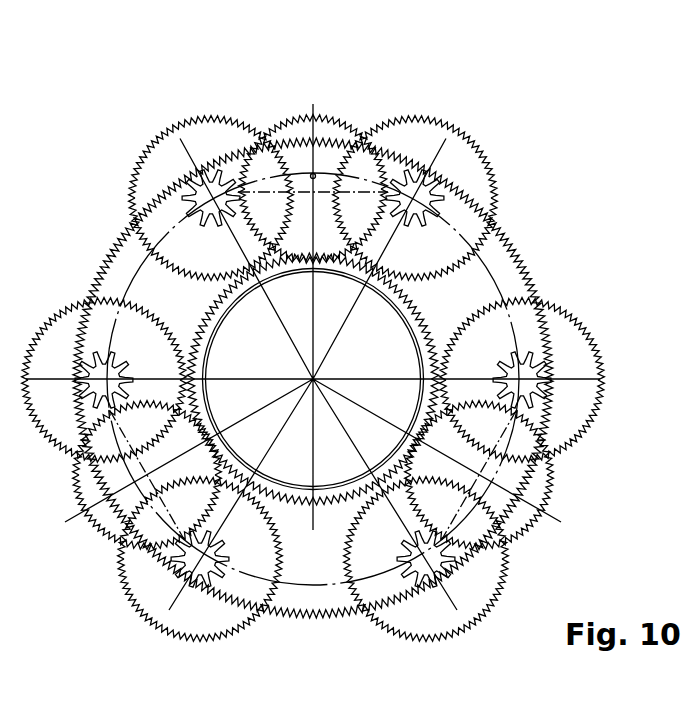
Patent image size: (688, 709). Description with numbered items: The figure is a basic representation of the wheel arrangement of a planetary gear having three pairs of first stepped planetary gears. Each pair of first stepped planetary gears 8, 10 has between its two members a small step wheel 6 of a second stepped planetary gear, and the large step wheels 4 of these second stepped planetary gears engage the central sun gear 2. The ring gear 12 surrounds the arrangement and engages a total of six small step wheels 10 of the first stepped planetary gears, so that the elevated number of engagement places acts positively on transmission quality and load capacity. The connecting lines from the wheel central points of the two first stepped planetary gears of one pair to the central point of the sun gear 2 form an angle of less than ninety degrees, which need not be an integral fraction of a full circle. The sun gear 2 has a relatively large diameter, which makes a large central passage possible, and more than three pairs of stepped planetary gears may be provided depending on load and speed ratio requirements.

The sun gear 2 is at (203, 320).
The large step wheel 4 is at (285, 117).
The small step wheel 6 is at (315, 175).
The first stepped planetary gear 8 is at (414, 116).
The small step wheel of first stepped planetary gear 10 is at (427, 188).
The ring gear 12 is at (513, 244).